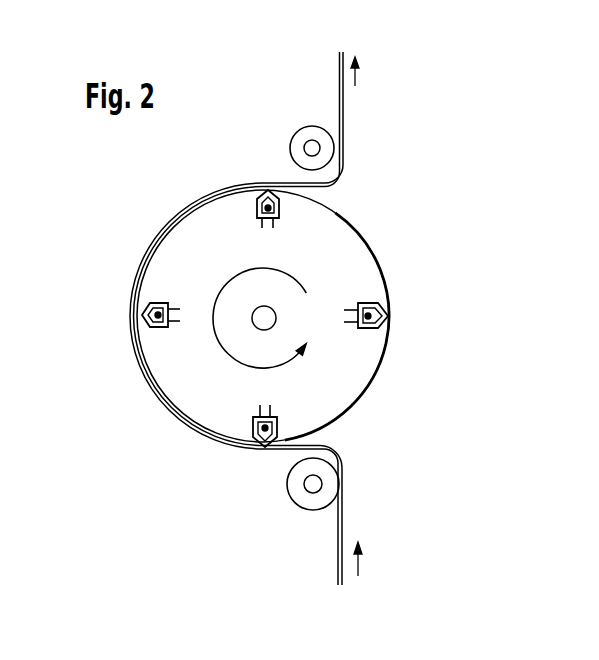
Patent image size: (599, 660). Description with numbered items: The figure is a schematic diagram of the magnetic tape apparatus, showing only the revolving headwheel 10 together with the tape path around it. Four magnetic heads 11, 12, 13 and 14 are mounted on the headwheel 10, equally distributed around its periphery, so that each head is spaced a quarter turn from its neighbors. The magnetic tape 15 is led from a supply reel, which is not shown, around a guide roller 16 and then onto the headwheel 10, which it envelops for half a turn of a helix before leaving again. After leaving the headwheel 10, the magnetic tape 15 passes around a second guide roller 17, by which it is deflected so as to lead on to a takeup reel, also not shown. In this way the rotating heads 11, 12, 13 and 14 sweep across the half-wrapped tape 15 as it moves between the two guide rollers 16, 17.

The headwheel 10 is at (366, 248).
The magnetic head 11 is at (248, 190).
The magnetic head 12 is at (140, 318).
The magnetic head 13 is at (256, 447).
The magnetic head 14 is at (389, 328).
The magnetic tape 15 is at (338, 545).
The guide roller 16 is at (331, 483).
The second guide roller 17 is at (336, 157).